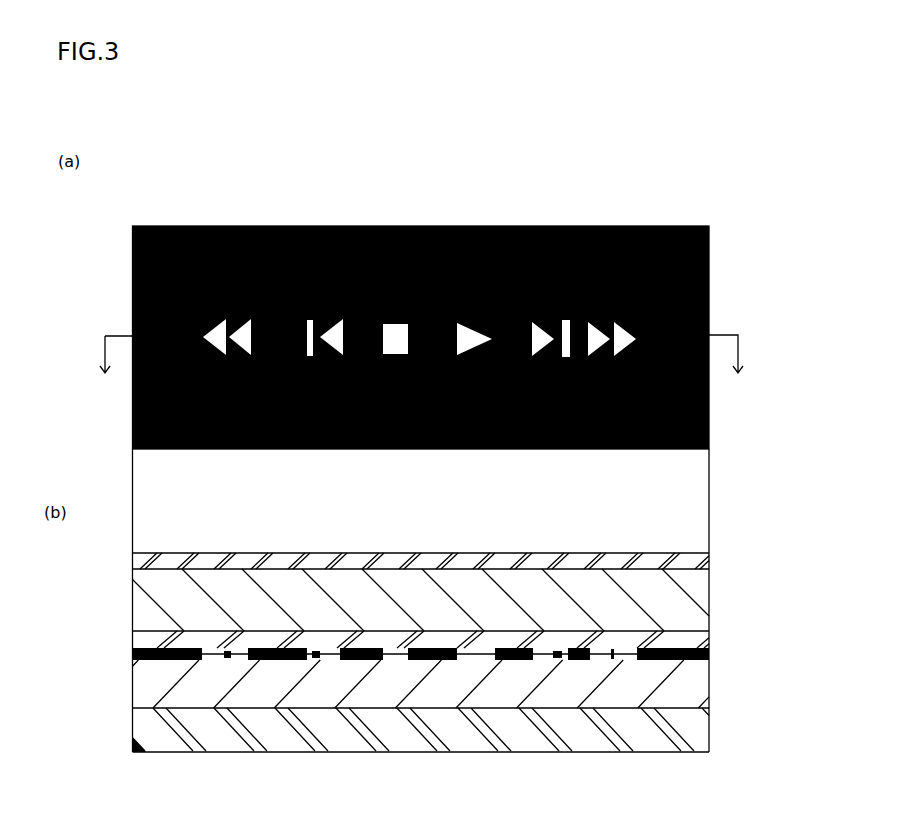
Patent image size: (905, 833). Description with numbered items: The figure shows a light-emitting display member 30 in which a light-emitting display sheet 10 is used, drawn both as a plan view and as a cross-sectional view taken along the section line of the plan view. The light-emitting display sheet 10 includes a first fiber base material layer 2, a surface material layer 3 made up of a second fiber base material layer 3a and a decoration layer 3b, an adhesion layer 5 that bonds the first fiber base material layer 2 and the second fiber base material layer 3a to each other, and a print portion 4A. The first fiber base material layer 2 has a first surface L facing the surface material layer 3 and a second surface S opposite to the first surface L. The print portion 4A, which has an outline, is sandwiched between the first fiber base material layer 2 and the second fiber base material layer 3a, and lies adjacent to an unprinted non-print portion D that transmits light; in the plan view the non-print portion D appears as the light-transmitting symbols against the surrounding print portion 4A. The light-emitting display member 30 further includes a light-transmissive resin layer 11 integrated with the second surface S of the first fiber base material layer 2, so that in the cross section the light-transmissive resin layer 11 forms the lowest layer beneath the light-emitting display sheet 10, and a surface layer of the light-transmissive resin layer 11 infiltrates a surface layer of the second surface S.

The light-emitting display member 30 is at (126, 199).
The surface material layer 3 is at (749, 553).
The second fiber base material layer 3a is at (709, 598).
The decoration layer 3b is at (709, 228).
The adhesion layer 5 is at (709, 638).
The print portion 4A is at (458, 449).
The first surface L is at (700, 659).
The first fiber base material layer 2 is at (749, 658).
The second surface S is at (701, 716).
The light-transmissive resin layer 11 is at (132, 722).
The light-emitting display sheet 10 is at (780, 553).
The non-print portion D is at (252, 449).